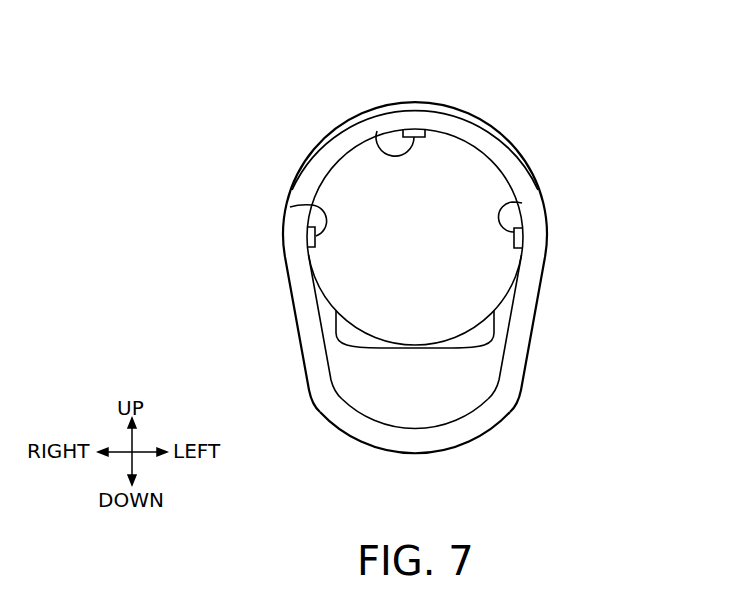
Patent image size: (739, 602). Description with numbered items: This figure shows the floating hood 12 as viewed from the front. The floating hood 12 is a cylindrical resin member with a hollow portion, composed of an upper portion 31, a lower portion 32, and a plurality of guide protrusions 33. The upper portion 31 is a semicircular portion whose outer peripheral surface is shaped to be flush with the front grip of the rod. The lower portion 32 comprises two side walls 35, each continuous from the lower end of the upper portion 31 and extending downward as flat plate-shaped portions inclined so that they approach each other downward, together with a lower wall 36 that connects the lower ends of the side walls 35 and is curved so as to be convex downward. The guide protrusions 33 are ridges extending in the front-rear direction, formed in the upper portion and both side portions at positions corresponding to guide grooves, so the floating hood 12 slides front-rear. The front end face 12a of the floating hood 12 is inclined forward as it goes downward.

The floating hood 12 is at (553, 103).
The front end face 12a is at (313, 370).
The upper portion 31 is at (457, 130).
The lower portion 32 is at (443, 387).
The guide protrusion 33 is at (382, 150).
The side wall 35 is at (299, 338).
The lower wall 36 is at (413, 453).